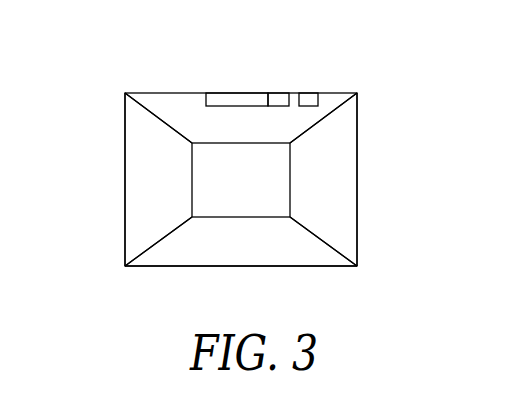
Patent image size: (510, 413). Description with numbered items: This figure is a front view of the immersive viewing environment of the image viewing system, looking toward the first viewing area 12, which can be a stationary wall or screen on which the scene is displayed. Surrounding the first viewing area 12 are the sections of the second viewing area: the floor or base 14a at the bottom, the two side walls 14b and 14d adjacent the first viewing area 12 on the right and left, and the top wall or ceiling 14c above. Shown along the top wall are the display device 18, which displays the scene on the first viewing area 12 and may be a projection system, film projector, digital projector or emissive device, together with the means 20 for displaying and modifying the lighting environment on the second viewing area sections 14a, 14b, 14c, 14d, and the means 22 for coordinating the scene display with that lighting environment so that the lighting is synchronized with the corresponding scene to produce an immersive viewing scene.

The first viewing area 12 is at (257, 192).
The second viewing area section (floor) 14a is at (232, 248).
The second viewing area section (side wall) 14b is at (325, 180).
The second viewing area section (top wall) 14c is at (163, 106).
The second viewing area section (side wall) 14d is at (138, 143).
The display device 18 is at (240, 98).
The means for displaying and modifying a lighting environment 20 is at (308, 100).
The means for coordinating 22 is at (282, 100).